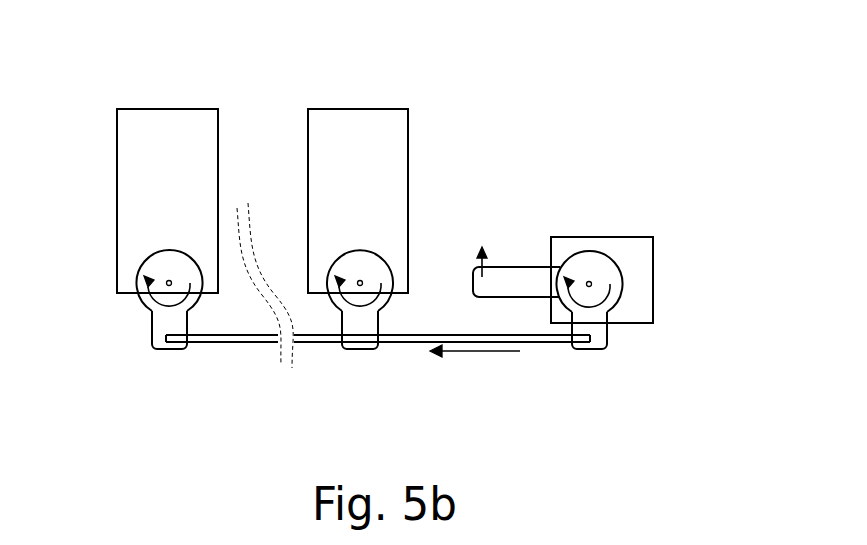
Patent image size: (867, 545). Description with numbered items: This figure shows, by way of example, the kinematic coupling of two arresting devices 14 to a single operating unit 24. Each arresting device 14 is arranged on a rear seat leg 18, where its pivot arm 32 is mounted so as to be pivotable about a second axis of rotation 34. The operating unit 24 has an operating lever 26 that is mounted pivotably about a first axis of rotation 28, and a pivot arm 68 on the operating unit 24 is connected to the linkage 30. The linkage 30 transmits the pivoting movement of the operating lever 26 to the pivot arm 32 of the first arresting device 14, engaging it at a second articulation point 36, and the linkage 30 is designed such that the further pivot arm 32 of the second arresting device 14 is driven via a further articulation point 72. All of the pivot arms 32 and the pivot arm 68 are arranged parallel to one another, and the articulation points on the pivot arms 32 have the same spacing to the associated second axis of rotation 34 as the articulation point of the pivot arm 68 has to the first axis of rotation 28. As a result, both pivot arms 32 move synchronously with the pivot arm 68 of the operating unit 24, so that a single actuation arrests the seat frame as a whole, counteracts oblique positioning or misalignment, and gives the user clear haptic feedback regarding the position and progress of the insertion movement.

The arresting device 14 is at (238, 158).
The rear seat leg 18 is at (187, 128).
The operating unit 24 is at (666, 258).
The operating lever 26 is at (507, 275).
The first axis of rotation 28 is at (589, 281).
The linkage 30 is at (240, 345).
The pivot arm 32 is at (152, 323).
The second axis of rotation 34 is at (168, 280).
The second articulation point 36 is at (357, 348).
The pivot arm 68 is at (608, 330).
The further articulation point 72 is at (167, 348).